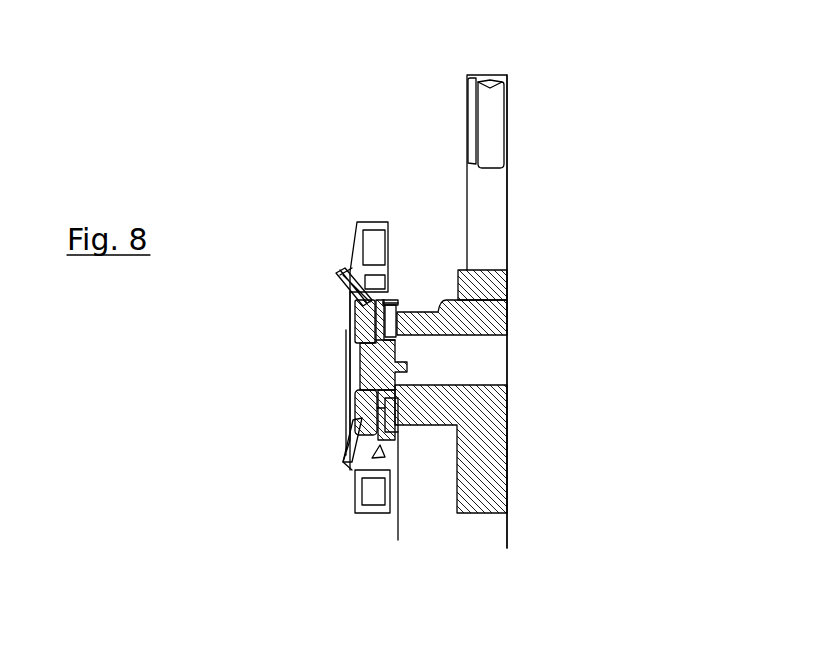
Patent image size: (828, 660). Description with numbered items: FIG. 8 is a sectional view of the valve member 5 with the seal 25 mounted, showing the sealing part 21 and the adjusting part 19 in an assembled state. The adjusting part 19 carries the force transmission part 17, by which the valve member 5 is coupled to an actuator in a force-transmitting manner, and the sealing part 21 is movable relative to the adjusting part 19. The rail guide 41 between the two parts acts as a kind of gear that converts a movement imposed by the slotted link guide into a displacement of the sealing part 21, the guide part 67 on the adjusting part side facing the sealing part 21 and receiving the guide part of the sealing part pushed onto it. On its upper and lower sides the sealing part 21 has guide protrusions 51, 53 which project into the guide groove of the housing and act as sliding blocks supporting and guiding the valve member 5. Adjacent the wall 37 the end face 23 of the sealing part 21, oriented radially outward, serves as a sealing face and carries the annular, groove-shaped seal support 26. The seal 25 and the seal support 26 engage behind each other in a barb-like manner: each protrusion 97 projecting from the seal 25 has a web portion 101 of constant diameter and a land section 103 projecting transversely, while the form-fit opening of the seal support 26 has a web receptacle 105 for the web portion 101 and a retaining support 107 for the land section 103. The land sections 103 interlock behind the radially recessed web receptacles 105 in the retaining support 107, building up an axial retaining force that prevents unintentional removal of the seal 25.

The valve member 5 is at (583, 90).
The force transmission part 17 is at (467, 108).
The adjusting part 19 is at (500, 472).
The sealing part 21 is at (323, 512).
The end face 23 is at (352, 366).
The seal 25 is at (347, 313).
The seal support 26 is at (332, 283).
The wall 37 is at (490, 224).
The rail guide 41 is at (457, 232).
The guide protrusion 51 is at (373, 225).
The guide protrusion 53 is at (357, 512).
The guide part 67 is at (508, 300).
The protrusion 97 is at (410, 300).
The web portion 101 is at (352, 338).
The land section 103 is at (390, 338).
The web receptacle 105 is at (378, 300).
The retaining support 107 is at (395, 300).